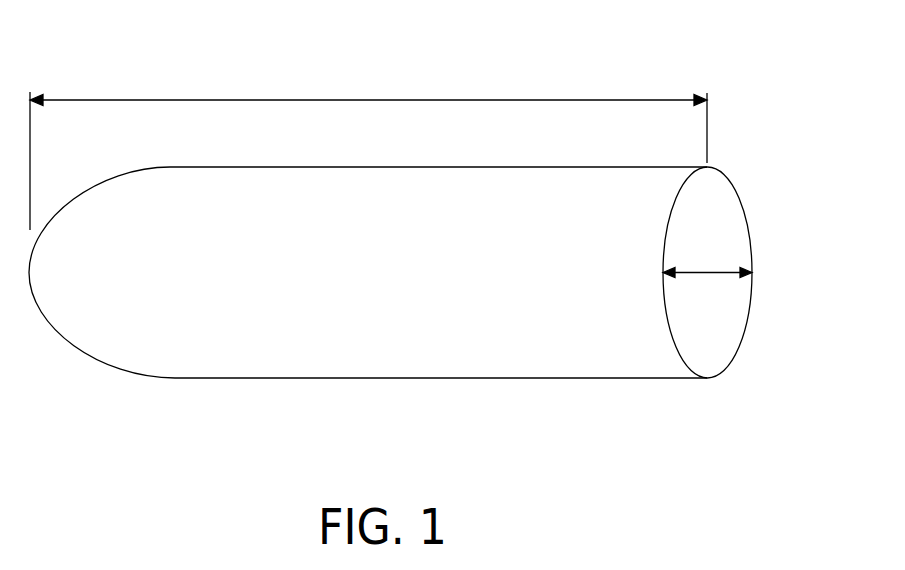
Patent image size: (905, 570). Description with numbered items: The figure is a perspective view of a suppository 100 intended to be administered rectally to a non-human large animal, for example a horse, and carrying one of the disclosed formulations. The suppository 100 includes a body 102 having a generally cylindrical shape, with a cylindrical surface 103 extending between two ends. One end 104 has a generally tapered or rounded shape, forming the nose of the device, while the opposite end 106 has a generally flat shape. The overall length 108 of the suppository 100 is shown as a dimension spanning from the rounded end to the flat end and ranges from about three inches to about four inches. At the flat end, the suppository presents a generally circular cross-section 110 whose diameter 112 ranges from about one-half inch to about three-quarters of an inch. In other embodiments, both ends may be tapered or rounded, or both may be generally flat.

The suppository 100 is at (347, 88).
The body 102 is at (437, 197).
The cylindrical surface 103 is at (300, 361).
The end 104 is at (90, 342).
The end 106 is at (727, 206).
The length 108 is at (520, 100).
The circular cross-section 110 is at (730, 367).
The diameter 112 is at (708, 275).